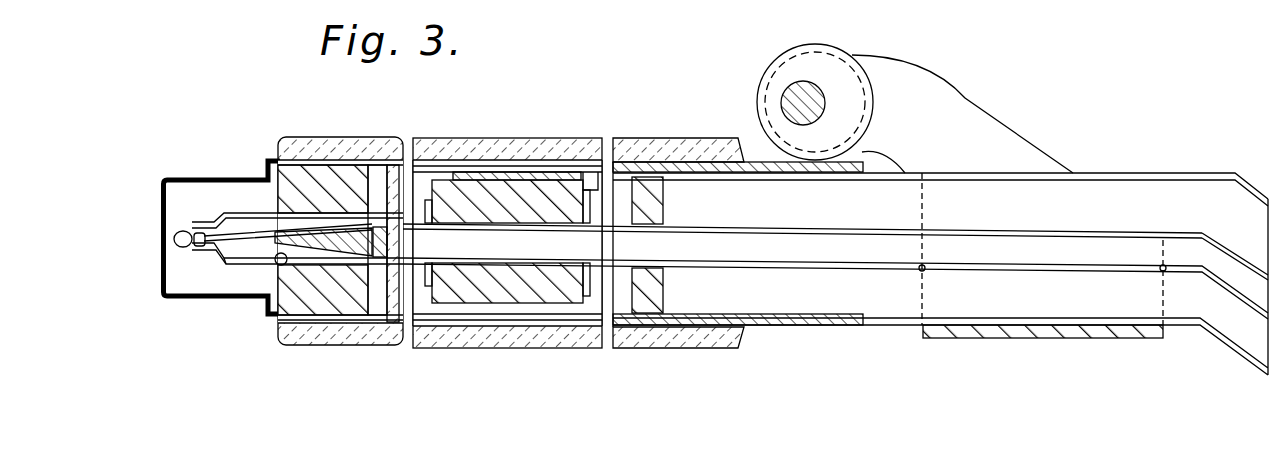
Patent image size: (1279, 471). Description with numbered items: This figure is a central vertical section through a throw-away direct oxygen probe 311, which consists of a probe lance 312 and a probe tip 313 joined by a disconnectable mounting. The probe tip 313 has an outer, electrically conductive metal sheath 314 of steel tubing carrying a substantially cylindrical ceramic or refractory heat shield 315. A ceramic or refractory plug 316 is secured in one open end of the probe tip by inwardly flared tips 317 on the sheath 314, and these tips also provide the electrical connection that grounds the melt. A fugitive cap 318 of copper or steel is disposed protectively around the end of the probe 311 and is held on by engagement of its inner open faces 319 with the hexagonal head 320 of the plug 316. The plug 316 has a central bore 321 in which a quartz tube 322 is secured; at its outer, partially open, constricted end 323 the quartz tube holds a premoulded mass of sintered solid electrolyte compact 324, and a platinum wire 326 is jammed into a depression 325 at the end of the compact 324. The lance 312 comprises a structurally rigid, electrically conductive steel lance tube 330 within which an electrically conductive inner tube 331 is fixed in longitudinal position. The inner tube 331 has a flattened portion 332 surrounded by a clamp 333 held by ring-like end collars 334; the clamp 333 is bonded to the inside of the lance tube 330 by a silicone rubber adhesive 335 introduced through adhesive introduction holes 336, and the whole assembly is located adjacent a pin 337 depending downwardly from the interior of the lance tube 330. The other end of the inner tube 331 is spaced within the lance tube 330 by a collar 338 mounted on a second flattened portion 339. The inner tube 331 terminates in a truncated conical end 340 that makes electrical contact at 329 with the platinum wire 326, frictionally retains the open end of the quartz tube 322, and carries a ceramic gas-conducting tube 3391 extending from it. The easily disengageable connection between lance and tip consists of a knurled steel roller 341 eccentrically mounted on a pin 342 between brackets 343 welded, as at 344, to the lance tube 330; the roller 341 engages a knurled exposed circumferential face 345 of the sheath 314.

The direct oxygen probe 311 is at (645, 352).
The probe lance 312 is at (1222, 344).
The probe tip 313 is at (348, 330).
The outer metal sheath 314 is at (672, 354).
The heat shield 315 is at (738, 343).
The plug 316 is at (307, 168).
The inwardly flared tips 317 is at (266, 180).
The fugitive cap 318 is at (208, 180).
The inner open faces 319 is at (198, 178).
The hexagonal head 320 is at (266, 300).
The central bore 321 is at (283, 266).
The quartz tube 322 is at (255, 266).
The constricted end 323 is at (203, 250).
The solid electrolyte compact 324 is at (194, 232).
The depression 325 is at (180, 180).
The platinum wire 326 is at (232, 262).
The electrical contact 329 is at (318, 240).
The lance tube 330 is at (840, 313).
The inner tube 331 is at (815, 250).
The flattened portion 332 is at (478, 222).
The clamp 333 is at (512, 347).
The end collars 334 is at (578, 112).
The silicone rubber adhesive 335 is at (528, 185).
The adhesive introduction holes 336 is at (440, 205).
The pin 337 is at (590, 150).
The collar 338 is at (648, 180).
The second flattened portion 339 is at (652, 242).
The ceramic gas-conducting tube 3391 is at (355, 204).
The truncated conical end 340 is at (350, 258).
The knurled steel roller 341 is at (800, 75).
The pin 342 is at (818, 100).
The brackets 343 is at (1003, 122).
The welds 344 is at (930, 288).
The knurled circumferential face 345 is at (787, 162).